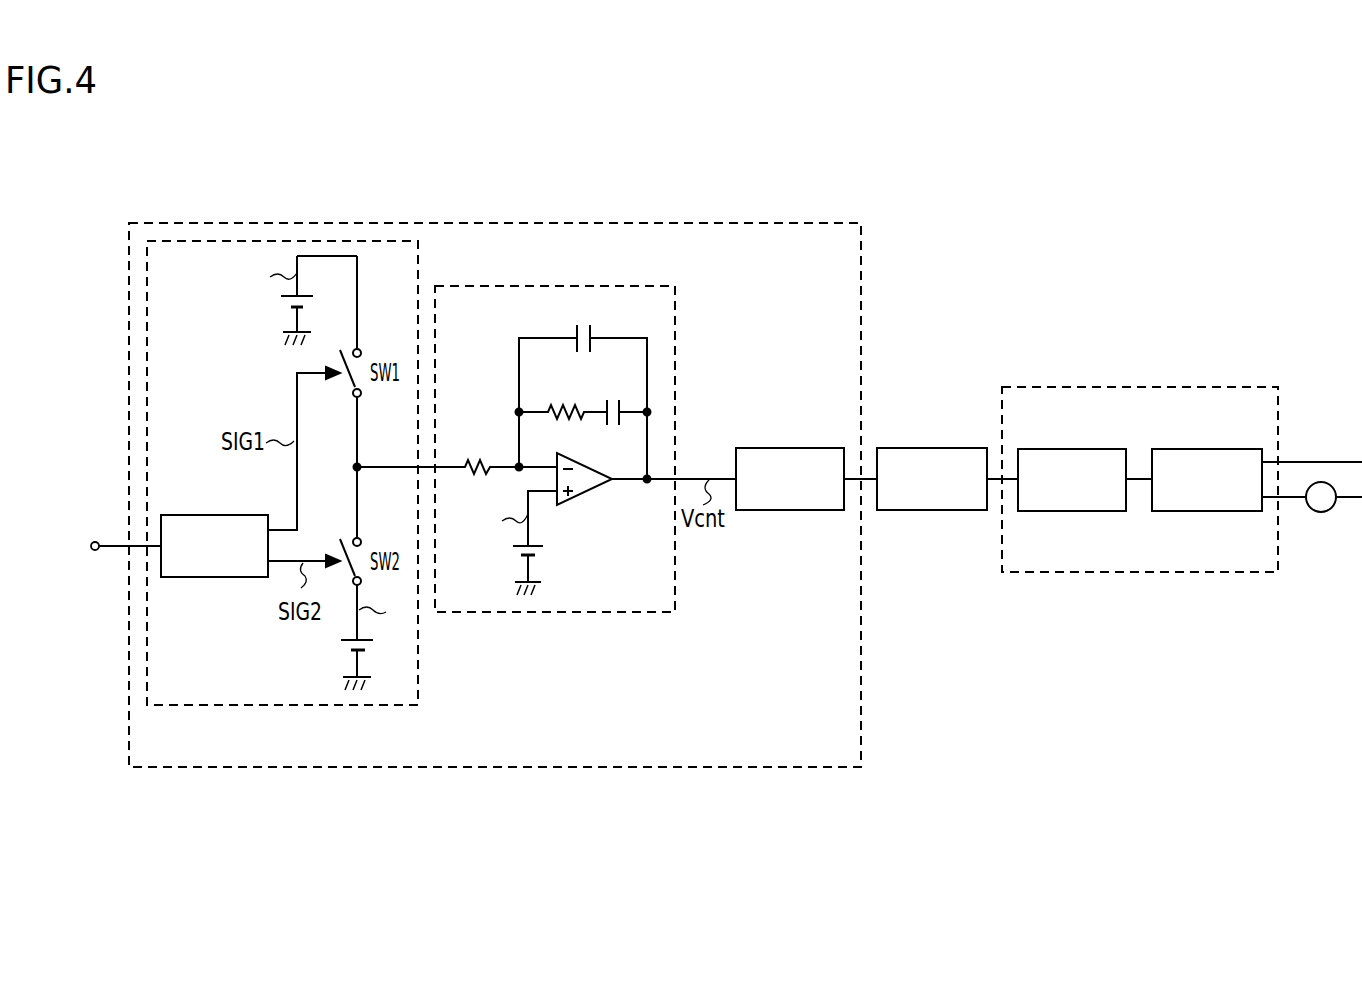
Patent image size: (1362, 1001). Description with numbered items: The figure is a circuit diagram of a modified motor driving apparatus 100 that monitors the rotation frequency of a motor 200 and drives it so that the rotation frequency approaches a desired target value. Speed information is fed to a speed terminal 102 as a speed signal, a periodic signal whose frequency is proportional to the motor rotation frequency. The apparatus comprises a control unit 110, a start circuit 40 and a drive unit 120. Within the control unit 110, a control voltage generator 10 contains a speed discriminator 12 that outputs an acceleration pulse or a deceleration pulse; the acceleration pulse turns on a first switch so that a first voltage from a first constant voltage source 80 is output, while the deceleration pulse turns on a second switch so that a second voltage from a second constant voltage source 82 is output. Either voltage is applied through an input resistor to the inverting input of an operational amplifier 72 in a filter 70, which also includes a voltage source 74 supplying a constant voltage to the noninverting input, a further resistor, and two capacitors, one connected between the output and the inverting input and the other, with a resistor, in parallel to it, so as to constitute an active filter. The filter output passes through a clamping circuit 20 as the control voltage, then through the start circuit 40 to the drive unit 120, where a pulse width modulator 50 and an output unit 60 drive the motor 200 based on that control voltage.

The control voltage generator 10 is at (282, 706).
The speed discriminator 12 is at (216, 578).
The clamping circuit 20 is at (790, 511).
The start circuit 40 is at (931, 511).
The pulse width modulator 50 is at (1072, 512).
The output unit 60 is at (1207, 512).
The filter 70 is at (585, 477).
The operational amplifier 72 is at (585, 498).
The voltage source 74 is at (545, 553).
The first constant voltage source 80 is at (290, 310).
The second constant voltage source 82 is at (340, 648).
The motor driving apparatus 100 is at (731, 870).
The speed terminal 102 is at (97, 551).
The control unit 110 is at (494, 768).
The drive unit 120 is at (1138, 573).
The motor 200 is at (1322, 513).